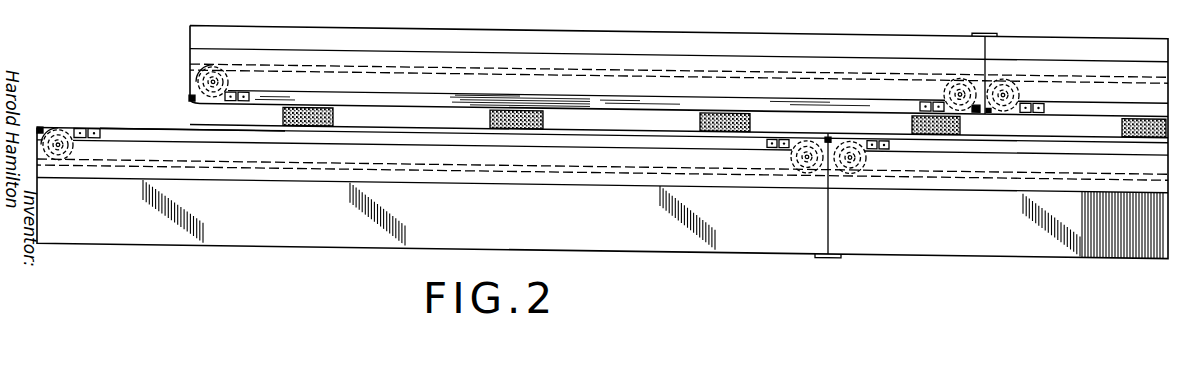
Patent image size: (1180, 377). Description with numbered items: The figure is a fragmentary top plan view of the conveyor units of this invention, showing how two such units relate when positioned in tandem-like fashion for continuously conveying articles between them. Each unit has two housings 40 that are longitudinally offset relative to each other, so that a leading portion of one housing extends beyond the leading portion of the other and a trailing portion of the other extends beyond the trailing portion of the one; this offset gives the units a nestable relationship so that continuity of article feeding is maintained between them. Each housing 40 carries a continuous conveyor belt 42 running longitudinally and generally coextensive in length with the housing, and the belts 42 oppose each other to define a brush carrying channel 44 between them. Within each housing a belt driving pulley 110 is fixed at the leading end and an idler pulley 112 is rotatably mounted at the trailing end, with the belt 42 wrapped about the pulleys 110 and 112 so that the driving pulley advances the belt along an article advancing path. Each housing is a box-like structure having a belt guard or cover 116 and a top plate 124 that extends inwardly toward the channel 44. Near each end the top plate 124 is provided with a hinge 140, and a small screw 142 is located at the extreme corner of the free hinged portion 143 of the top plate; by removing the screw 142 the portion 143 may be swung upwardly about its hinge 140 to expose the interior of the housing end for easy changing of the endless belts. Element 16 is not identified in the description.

The resilient block 16 is at (323, 128).
The housing 40 is at (672, 33).
The continuous conveyor belt 42 is at (437, 107).
The brush carrying channel 44 is at (240, 117).
The belt driving pulley 110 is at (200, 72).
The idler pulley 112 is at (953, 80).
The belt guard or cover 116 is at (301, 57).
The top plate 124 is at (392, 101).
The hinge 140 is at (250, 92).
The small screw 142 is at (38, 126).
The free hinged portion 143 is at (190, 89).